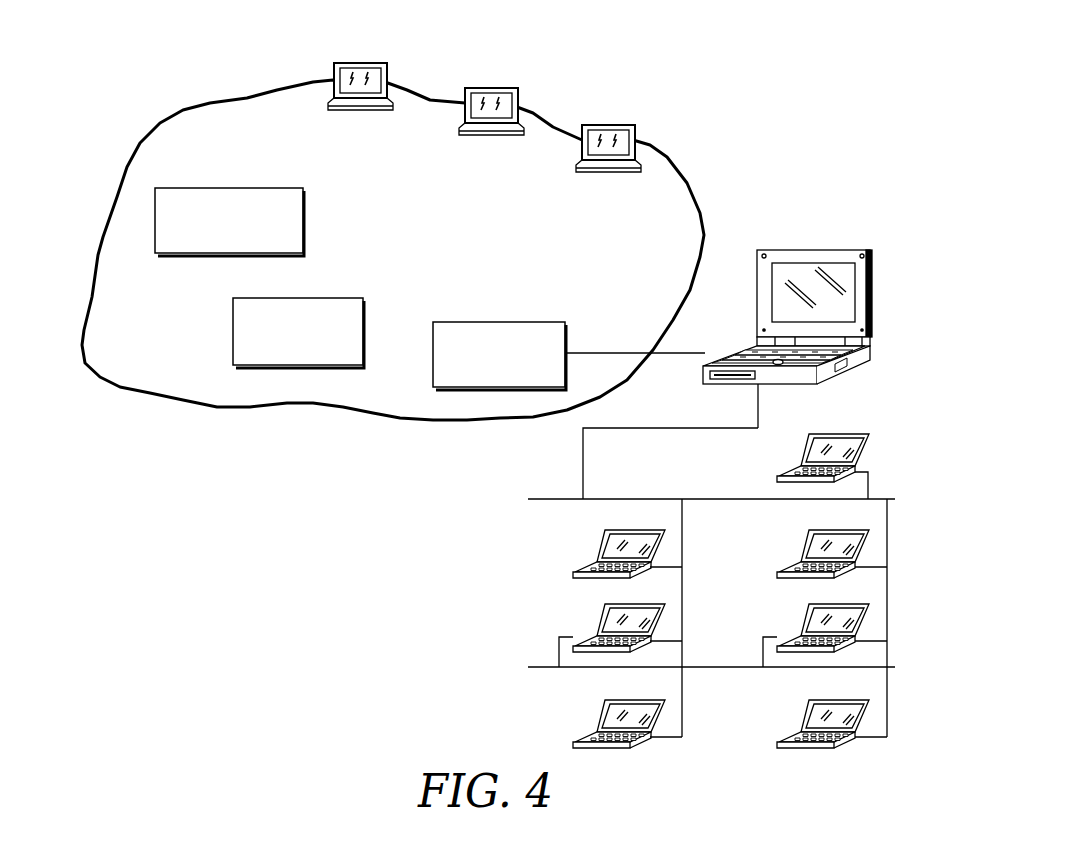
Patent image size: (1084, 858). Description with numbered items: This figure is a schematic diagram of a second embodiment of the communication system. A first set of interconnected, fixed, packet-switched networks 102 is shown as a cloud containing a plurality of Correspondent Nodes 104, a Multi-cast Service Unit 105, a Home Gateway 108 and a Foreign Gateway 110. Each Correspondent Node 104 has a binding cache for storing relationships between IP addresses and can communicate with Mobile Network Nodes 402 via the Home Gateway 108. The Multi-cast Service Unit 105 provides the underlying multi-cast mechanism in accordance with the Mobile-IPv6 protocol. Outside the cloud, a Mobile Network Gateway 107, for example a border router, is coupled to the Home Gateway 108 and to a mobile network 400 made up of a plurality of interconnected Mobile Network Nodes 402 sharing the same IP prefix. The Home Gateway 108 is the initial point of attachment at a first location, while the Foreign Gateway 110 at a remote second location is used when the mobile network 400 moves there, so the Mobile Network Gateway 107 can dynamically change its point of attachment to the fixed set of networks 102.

The fixed set of networks 102 is at (683, 172).
The Correspondent Node 104 is at (372, 63).
The Multi-cast Service Unit 105 is at (268, 188).
The Mobile Network Gateway 107 is at (853, 250).
The Home Gateway 108 is at (548, 322).
The Foreign Gateway 110 is at (347, 298).
The mobile network 400 is at (500, 566).
The Mobile Network Node 402 is at (853, 432).